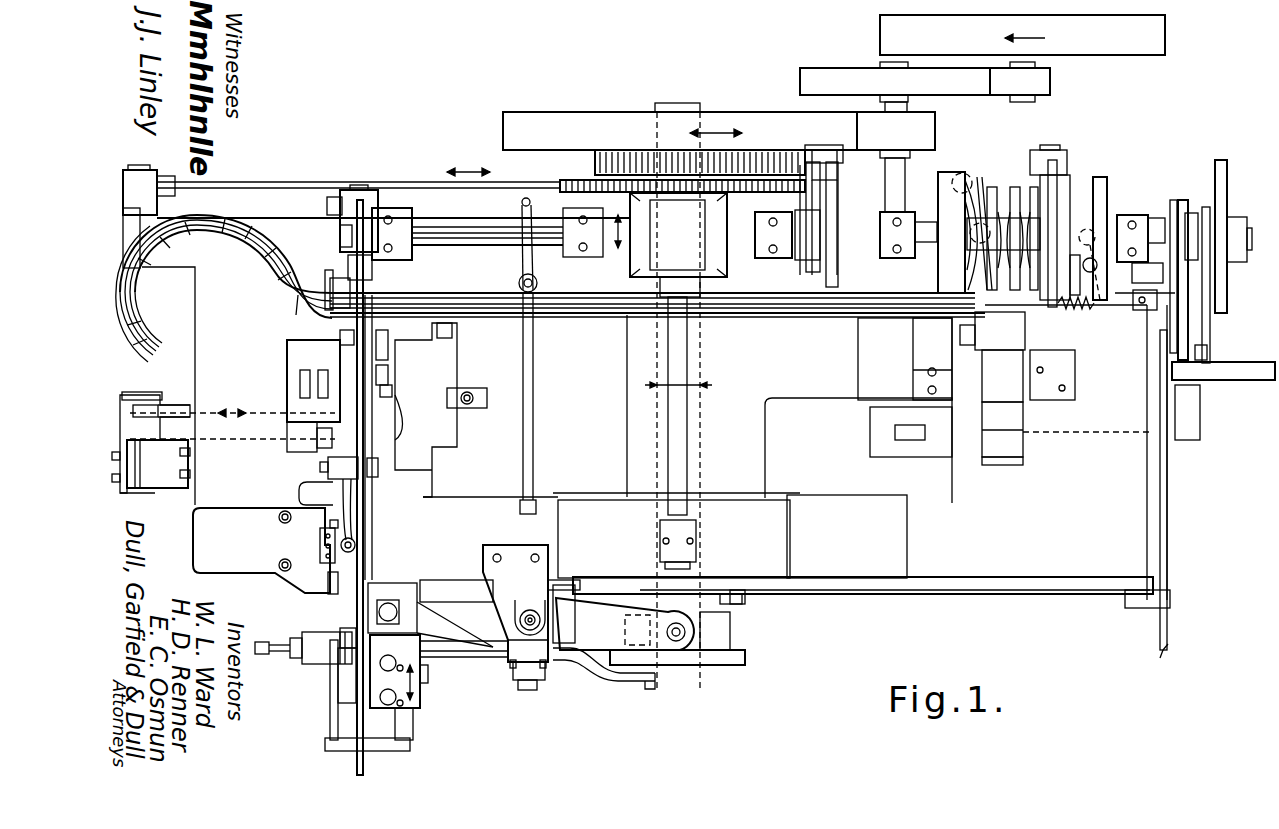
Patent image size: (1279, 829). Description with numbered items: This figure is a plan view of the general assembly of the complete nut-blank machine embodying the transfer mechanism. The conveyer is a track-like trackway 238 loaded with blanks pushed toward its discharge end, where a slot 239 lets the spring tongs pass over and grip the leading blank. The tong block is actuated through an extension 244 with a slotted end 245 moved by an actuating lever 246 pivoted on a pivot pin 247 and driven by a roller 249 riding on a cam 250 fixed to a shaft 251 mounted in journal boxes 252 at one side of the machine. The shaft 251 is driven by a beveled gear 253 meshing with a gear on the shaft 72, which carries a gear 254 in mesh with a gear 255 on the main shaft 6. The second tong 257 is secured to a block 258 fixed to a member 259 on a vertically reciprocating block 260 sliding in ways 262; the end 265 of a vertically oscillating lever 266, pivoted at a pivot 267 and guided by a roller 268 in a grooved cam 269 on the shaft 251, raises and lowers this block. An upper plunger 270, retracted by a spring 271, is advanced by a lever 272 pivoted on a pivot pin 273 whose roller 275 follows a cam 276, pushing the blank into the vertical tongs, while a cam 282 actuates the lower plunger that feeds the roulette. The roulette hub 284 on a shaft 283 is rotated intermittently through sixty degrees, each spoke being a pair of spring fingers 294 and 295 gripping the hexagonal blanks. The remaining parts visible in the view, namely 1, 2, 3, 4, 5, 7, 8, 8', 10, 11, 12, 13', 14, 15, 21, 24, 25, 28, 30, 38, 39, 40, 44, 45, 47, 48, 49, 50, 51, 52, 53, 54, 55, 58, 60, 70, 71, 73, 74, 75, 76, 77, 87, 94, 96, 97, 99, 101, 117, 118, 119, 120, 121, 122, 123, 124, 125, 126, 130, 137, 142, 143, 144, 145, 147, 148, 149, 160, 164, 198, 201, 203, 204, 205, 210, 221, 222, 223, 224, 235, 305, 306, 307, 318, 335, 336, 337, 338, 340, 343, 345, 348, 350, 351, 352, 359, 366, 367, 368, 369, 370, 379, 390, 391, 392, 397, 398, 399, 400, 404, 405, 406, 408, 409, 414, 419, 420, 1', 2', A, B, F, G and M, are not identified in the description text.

The bar 1 is at (1022, 35).
The link 2 is at (1020, 82).
The link bar 3 is at (895, 87).
The slide block 4 is at (896, 162).
The plate 5 is at (680, 131).
The main shaft 6 is at (652, 562).
The bracket 7 is at (742, 608).
The block 8 is at (721, 631).
The pin 8' is at (634, 630).
The arm 10 is at (600, 681).
The foot 11 is at (526, 690).
The support 12 is at (553, 679).
The lever 13' is at (574, 589).
The rail 14 is at (472, 658).
The rail support 15 is at (447, 658).
The block 21 is at (395, 671).
The stud 24 is at (382, 681).
The post 25 is at (413, 722).
The bracket 28 is at (338, 652).
The arm 30 is at (330, 665).
The knob block 38 is at (315, 640).
The rod 39 is at (352, 487).
The plate 40 is at (382, 649).
The bar 44 is at (330, 722).
The base plate 45 is at (367, 753).
The screw 47 is at (264, 642).
The swing arm 48 is at (625, 624).
The pivot 49 is at (663, 632).
The pivot pin 50 is at (530, 613).
The bracket 51 is at (515, 603).
The holes 52 is at (516, 557).
The block 53 is at (528, 648).
The base 54 is at (513, 670).
The stop 55 is at (560, 634).
The arm 58 is at (420, 614).
The boss 60 is at (397, 612).
The rail 70 is at (393, 222).
The carriage 71 is at (632, 270).
The shaft 72 is at (650, 280).
The block 73 is at (392, 234).
The bracket 74 is at (372, 270).
The block 75 is at (352, 195).
The stop 76 is at (327, 207).
The guide 77 is at (342, 234).
The base plate 87 is at (265, 551).
The bracket 94 is at (316, 493).
The stud 96 is at (384, 467).
The block 97 is at (339, 489).
The lever 99 is at (373, 490).
The pivot 101 is at (356, 545).
The rail 117 is at (358, 173).
The frame 118 is at (148, 322).
The frame plate 119 is at (159, 249).
The frame 120 is at (170, 486).
The block 121 is at (140, 172).
The support 122 is at (183, 177).
The plate 123 is at (162, 398).
The guide 124 is at (150, 392).
The block 125 is at (161, 419).
The block 126 is at (142, 450).
The axis 130 is at (232, 403).
The pin 137 is at (381, 436).
The block 142 is at (313, 381).
The stop 143 is at (323, 330).
The arm 144 is at (292, 426).
The bracket 145 is at (307, 448).
The link 147 is at (302, 427).
The axis 148 is at (237, 441).
The link 149 is at (192, 437).
The pawl 160 is at (403, 375).
The lever 164 is at (370, 323).
The slots 198 is at (300, 385).
The lever 201 is at (388, 360).
The stop 203 is at (428, 328).
The rail 204 is at (372, 286).
The link 205 is at (342, 532).
The pin 210 is at (392, 390).
The chain 221 is at (190, 385).
The chain guide 222 is at (205, 360).
The chain link 223 is at (248, 252).
The chain guide 224 is at (280, 292).
The bracket 235 is at (340, 284).
The conveyer 238 is at (657, 311).
The slot 239 is at (952, 285).
The extension 244 is at (1075, 308).
The slotted end 245 is at (950, 265).
The actuating lever 246 is at (982, 190).
The pivot pin 247 is at (960, 174).
The roller 249 is at (962, 233).
The cam 250 is at (938, 190).
The shaft 251 is at (1238, 217).
The journal boxes 252 is at (951, 237).
The beveled gear 253 is at (726, 262).
The gear 254 is at (600, 165).
The gear 255 is at (722, 162).
The tong 257 is at (1001, 376).
The block 258 is at (975, 326).
The member 259 is at (1002, 381).
The vertically reciprocating block 260 is at (1000, 342).
The ways 262 is at (1052, 375).
The end of lever 265 is at (1050, 320).
The vertically oscillating lever 266 is at (1057, 208).
The pivot 267 is at (1040, 150).
The roller 268 is at (1063, 225).
The cam 269 is at (1068, 178).
The upper plunger 270 is at (1088, 312).
The spring 271 is at (1110, 308).
The lever 272 is at (1120, 277).
The pivot pin 273 is at (1064, 275).
The roller 275 is at (1094, 232).
The cam 276 is at (1107, 185).
The cam 282 is at (1030, 195).
The shaft 283 is at (905, 359).
The hub 284 is at (960, 375).
The spring finger 294 is at (962, 332).
The spring finger 295 is at (970, 415).
The block 305 is at (1000, 441).
The bracket 306 is at (1025, 452).
The axis 307 is at (1143, 430).
The block 318 is at (1200, 407).
The bracket 335 is at (820, 150).
The block 336 is at (808, 235).
The rod 337 is at (835, 171).
The rod 338 is at (840, 197).
The rod 340 is at (840, 227).
The bracket 343 is at (1210, 355).
The pin 345 is at (1216, 339).
The plate 348 is at (1210, 318).
The plate 350 is at (1215, 290).
The plate 351 is at (1222, 160).
The plate 352 is at (1207, 271).
The plate 359 is at (1183, 200).
The block 366 is at (1145, 278).
The plate 367 is at (1162, 266).
The frame 368 is at (795, 452).
The bracket 369 is at (426, 410).
The roller 370 is at (467, 408).
The shaft 379 is at (1255, 380).
The rack 390 is at (575, 180).
The gear 391 is at (662, 175).
The rack end 392 is at (795, 180).
The pivot 397 is at (526, 198).
The rod 398 is at (533, 420).
The pivot 399 is at (519, 282).
The foot 400 is at (524, 514).
The stop 404 is at (737, 590).
The base plate 405 is at (993, 594).
The bracket 406 is at (1147, 602).
The hook 408 is at (1160, 645).
The bar 409 is at (1160, 557).
The block 414 is at (1155, 221).
The link 419 is at (1165, 435).
The bar 420 is at (1168, 487).
The pin 1' is at (405, 439).
The spring 2' is at (419, 400).
The direction arrow A is at (1037, 38).
The direction arrow B is at (716, 133).
The direction arrow F is at (678, 386).
The direction arrow G is at (621, 231).
The direction arrow M is at (468, 173).